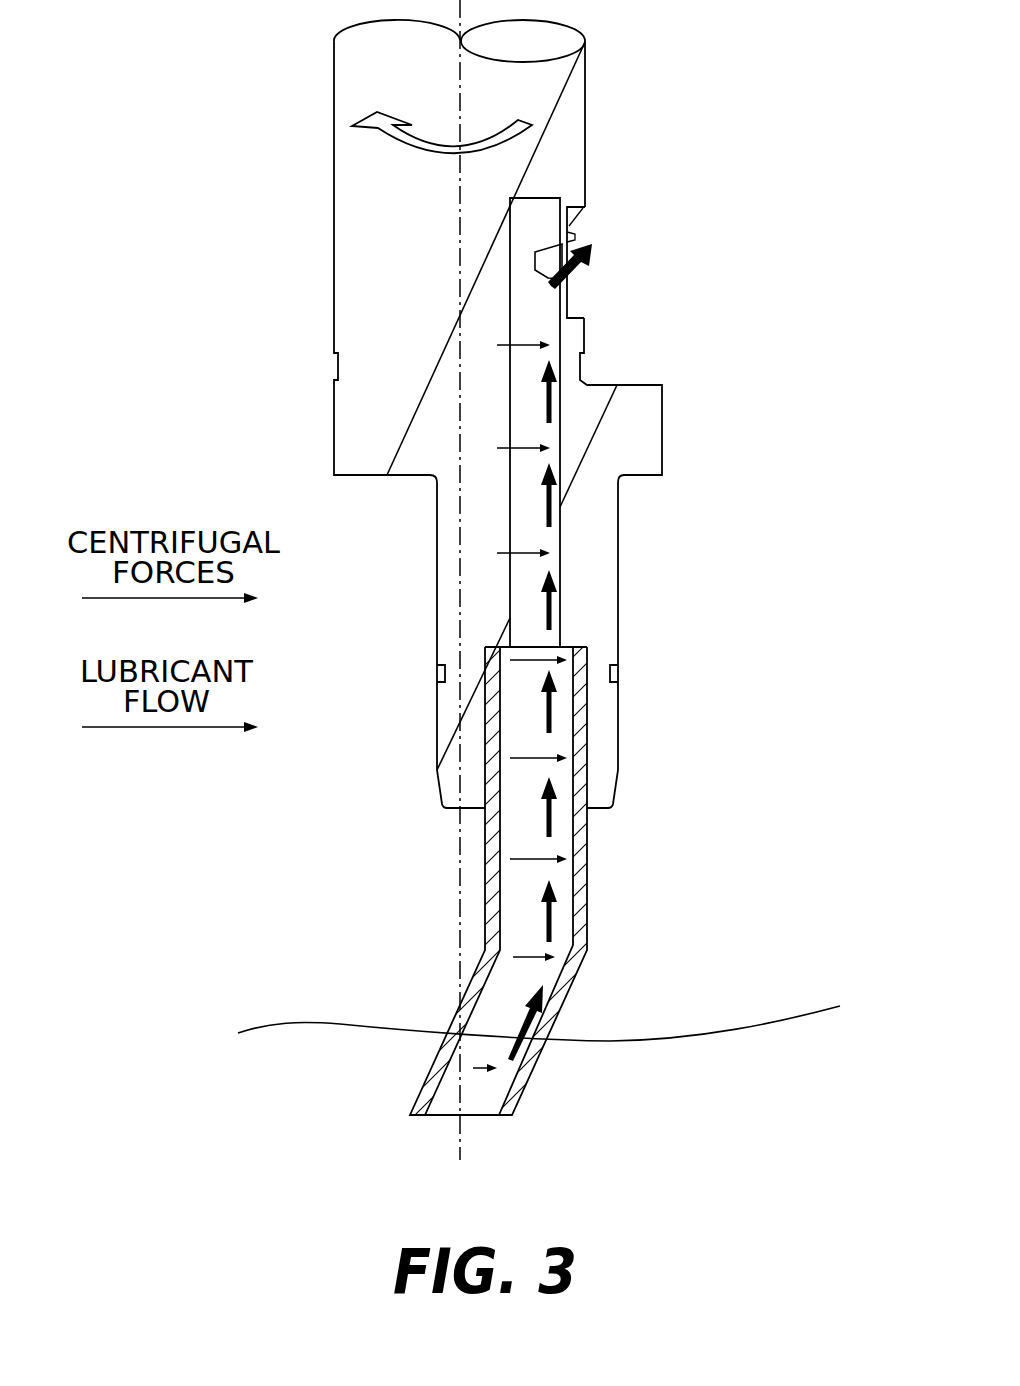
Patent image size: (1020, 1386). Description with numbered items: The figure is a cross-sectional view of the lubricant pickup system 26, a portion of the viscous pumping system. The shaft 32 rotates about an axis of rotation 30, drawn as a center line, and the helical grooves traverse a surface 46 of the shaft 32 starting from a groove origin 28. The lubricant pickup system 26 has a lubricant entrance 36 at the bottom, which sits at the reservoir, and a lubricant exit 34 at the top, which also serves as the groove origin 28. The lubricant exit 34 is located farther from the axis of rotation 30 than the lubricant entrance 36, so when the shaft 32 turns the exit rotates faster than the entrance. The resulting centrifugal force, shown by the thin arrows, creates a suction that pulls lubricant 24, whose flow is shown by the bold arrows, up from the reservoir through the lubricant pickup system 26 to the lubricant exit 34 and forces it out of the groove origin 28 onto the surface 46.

The lubricant 24 is at (680, 1038).
The lubricant pickup system 26 is at (592, 885).
The groove origin 28 is at (577, 222).
The axis of rotation 30 is at (460, 880).
The shaft 32 is at (600, 597).
The lubricant exit 34 is at (563, 282).
The lubricant entrance 36 is at (483, 1117).
The surface 46 is at (350, 228).